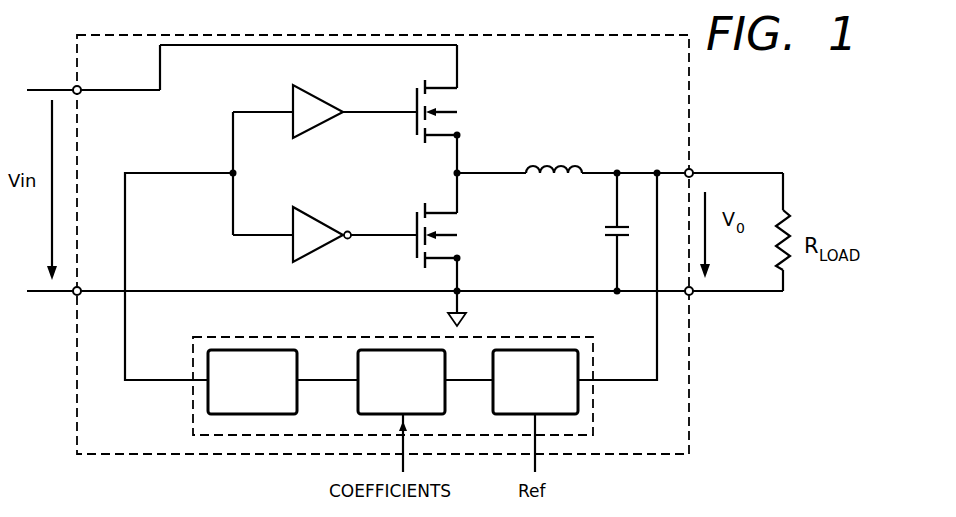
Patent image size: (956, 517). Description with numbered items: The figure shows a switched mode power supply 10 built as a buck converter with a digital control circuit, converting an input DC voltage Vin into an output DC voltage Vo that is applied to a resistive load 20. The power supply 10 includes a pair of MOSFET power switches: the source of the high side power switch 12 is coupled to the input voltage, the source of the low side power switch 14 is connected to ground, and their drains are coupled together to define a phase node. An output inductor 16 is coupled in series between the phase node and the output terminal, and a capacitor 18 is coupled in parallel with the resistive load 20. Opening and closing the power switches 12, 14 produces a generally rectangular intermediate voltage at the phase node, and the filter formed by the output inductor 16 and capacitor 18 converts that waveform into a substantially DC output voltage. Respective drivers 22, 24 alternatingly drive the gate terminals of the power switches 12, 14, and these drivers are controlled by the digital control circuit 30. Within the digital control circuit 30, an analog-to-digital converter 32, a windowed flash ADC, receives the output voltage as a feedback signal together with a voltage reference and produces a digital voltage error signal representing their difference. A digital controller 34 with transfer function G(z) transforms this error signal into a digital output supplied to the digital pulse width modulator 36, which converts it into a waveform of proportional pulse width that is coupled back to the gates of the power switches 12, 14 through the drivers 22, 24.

The switched mode power supply 10 is at (443, 244).
The high side power switch 12 is at (458, 100).
The low side power switch 14 is at (454, 222).
The output inductor 16 is at (560, 166).
The capacitor 18 is at (605, 233).
The resistive load 20 is at (792, 226).
The driver 22 is at (293, 98).
The driver 24 is at (293, 248).
The digital control circuit 30 is at (597, 393).
The analog-to-digital converter 32 is at (567, 365).
The digital controller 34 is at (367, 364).
The digital pulse width modulator 36 is at (220, 365).